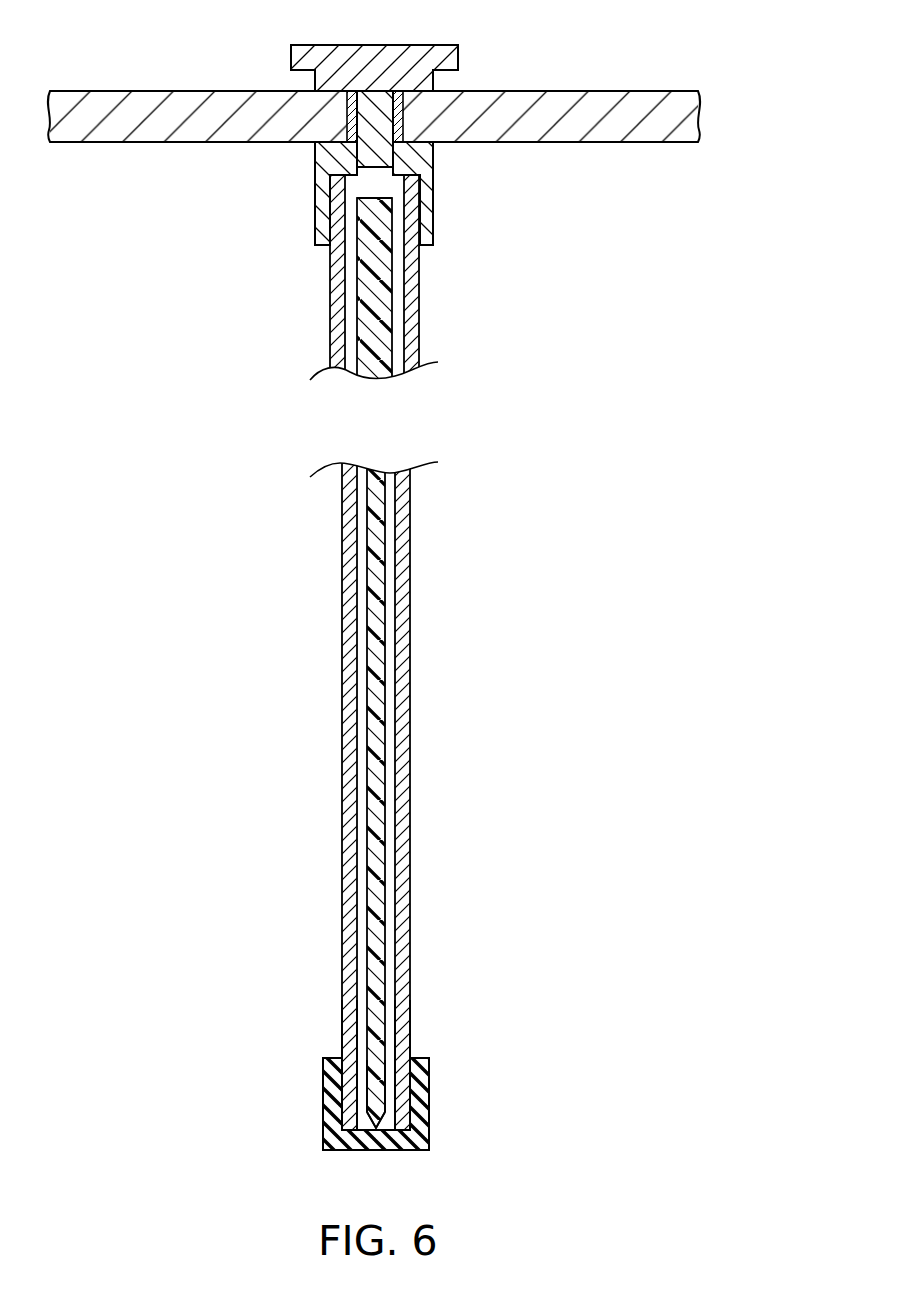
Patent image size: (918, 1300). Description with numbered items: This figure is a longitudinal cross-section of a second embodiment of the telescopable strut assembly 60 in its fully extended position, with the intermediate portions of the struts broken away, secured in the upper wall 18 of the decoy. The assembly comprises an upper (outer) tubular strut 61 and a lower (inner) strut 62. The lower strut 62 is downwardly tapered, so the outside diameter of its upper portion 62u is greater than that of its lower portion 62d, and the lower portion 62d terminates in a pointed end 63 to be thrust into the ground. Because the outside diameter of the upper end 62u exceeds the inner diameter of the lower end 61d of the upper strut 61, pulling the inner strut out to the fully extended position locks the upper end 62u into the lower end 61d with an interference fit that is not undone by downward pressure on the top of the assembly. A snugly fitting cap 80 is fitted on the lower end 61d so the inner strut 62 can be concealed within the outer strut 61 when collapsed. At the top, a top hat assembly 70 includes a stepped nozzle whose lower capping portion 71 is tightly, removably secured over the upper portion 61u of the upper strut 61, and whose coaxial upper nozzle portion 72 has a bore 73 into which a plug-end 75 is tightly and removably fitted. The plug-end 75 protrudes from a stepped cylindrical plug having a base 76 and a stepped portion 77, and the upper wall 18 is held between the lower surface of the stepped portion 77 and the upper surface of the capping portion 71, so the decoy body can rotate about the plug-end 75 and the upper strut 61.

The upper wall 18 is at (602, 143).
The telescopable strut assembly 60 is at (334, 674).
The upper tubular strut 61 is at (416, 652).
The upper portion of upper strut 61u is at (421, 262).
The lower end of upper strut 61d is at (411, 1040).
The lower strut 62 is at (388, 666).
The upper portion of lower strut 62u is at (393, 212).
The lower portion of lower strut 62d is at (385, 1081).
The pointed end 63 is at (375, 1127).
The top hat assembly 70 is at (349, 122).
The lower capping portion 71 is at (433, 182).
The upper nozzle portion 72 is at (347, 122).
The bore 73 is at (372, 102).
The plug-end 75 is at (357, 158).
The base 76 is at (418, 45).
The stepped portion 77 is at (435, 87).
The cap 80 is at (430, 1138).